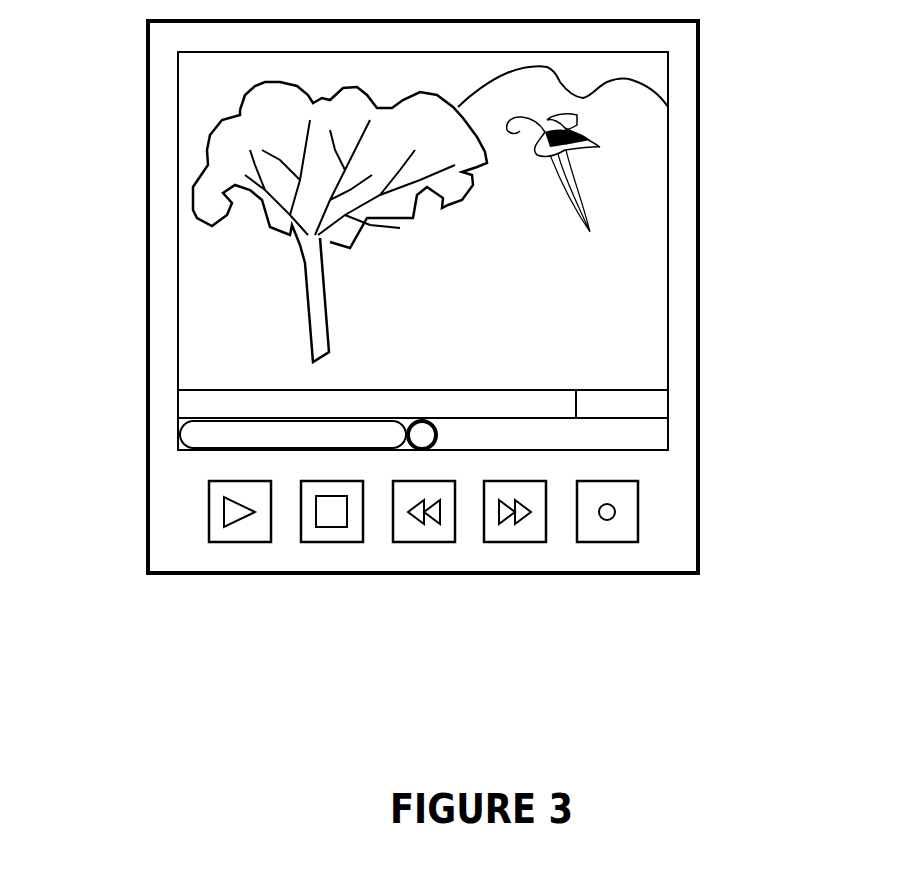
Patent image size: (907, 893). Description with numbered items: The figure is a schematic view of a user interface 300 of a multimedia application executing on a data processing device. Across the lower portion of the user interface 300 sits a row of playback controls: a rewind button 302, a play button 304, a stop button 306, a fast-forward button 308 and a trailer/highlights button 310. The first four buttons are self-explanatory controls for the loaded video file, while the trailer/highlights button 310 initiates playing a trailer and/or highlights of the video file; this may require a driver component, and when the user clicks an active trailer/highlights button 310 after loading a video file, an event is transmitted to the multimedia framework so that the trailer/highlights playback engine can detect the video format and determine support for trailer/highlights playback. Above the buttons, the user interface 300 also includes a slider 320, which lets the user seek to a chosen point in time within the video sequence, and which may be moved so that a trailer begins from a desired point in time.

The user interface 300 is at (699, 296).
The rewind button 302 is at (424, 543).
The play button 304 is at (222, 512).
The stop button 306 is at (332, 533).
The fast-forward button 308 is at (513, 533).
The trailer/highlights button 310 is at (626, 511).
The slider 320 is at (437, 438).